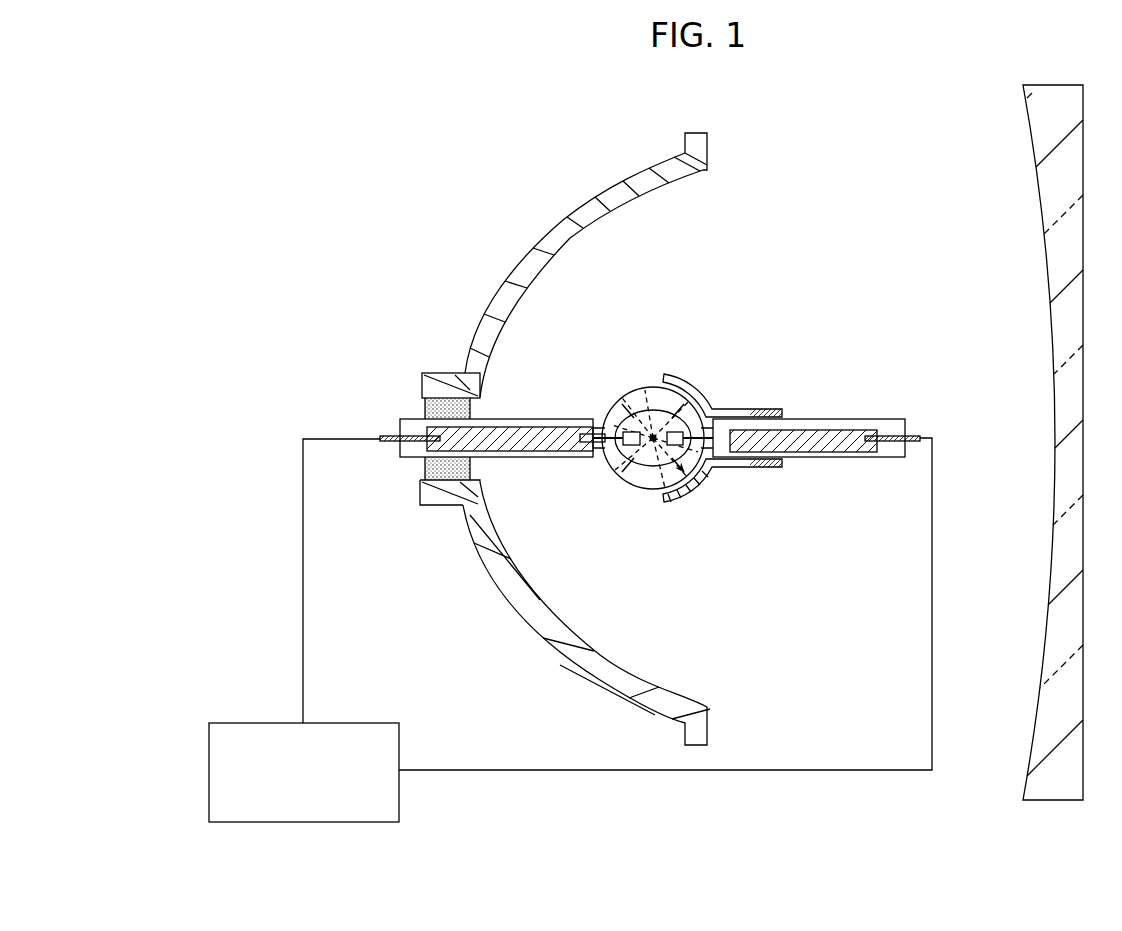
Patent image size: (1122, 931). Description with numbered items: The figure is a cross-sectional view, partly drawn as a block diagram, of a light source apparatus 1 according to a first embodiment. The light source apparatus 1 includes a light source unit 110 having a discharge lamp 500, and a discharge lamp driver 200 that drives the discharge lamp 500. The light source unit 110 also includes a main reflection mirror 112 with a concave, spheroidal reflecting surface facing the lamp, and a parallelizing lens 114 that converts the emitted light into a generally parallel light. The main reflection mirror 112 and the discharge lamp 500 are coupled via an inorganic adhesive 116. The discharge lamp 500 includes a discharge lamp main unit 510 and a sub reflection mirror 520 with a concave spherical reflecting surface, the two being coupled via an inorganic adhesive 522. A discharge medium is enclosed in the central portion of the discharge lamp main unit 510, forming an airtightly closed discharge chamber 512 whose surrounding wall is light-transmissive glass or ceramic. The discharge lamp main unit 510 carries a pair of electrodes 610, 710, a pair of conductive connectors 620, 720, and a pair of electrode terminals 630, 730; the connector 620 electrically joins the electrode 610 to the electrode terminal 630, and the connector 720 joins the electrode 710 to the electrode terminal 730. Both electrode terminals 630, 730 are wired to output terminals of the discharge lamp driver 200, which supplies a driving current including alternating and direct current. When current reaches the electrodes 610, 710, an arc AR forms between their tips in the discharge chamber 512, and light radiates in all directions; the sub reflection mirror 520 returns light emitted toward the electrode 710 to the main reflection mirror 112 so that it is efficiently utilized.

The light source apparatus 1 is at (916, 95).
The light source unit 110 is at (468, 118).
The main reflection mirror 112 is at (608, 200).
The parallelizing lens 114 is at (1047, 137).
The inorganic adhesive 116 is at (422, 375).
The discharge lamp driver 200 is at (378, 723).
The discharge lamp 500 is at (800, 300).
The discharge lamp main unit 510 is at (638, 400).
The discharge chamber 512 is at (648, 484).
The sub reflection mirror 520 is at (700, 495).
The inorganic adhesive 522 is at (790, 468).
The electrode 610 is at (612, 468).
The conductive connector 620 is at (553, 432).
The electrode terminal 630 is at (388, 437).
The electrode 710 is at (712, 399).
The conductive connector 720 is at (828, 432).
The electrode terminal 730 is at (892, 436).
The arc AR is at (655, 426).